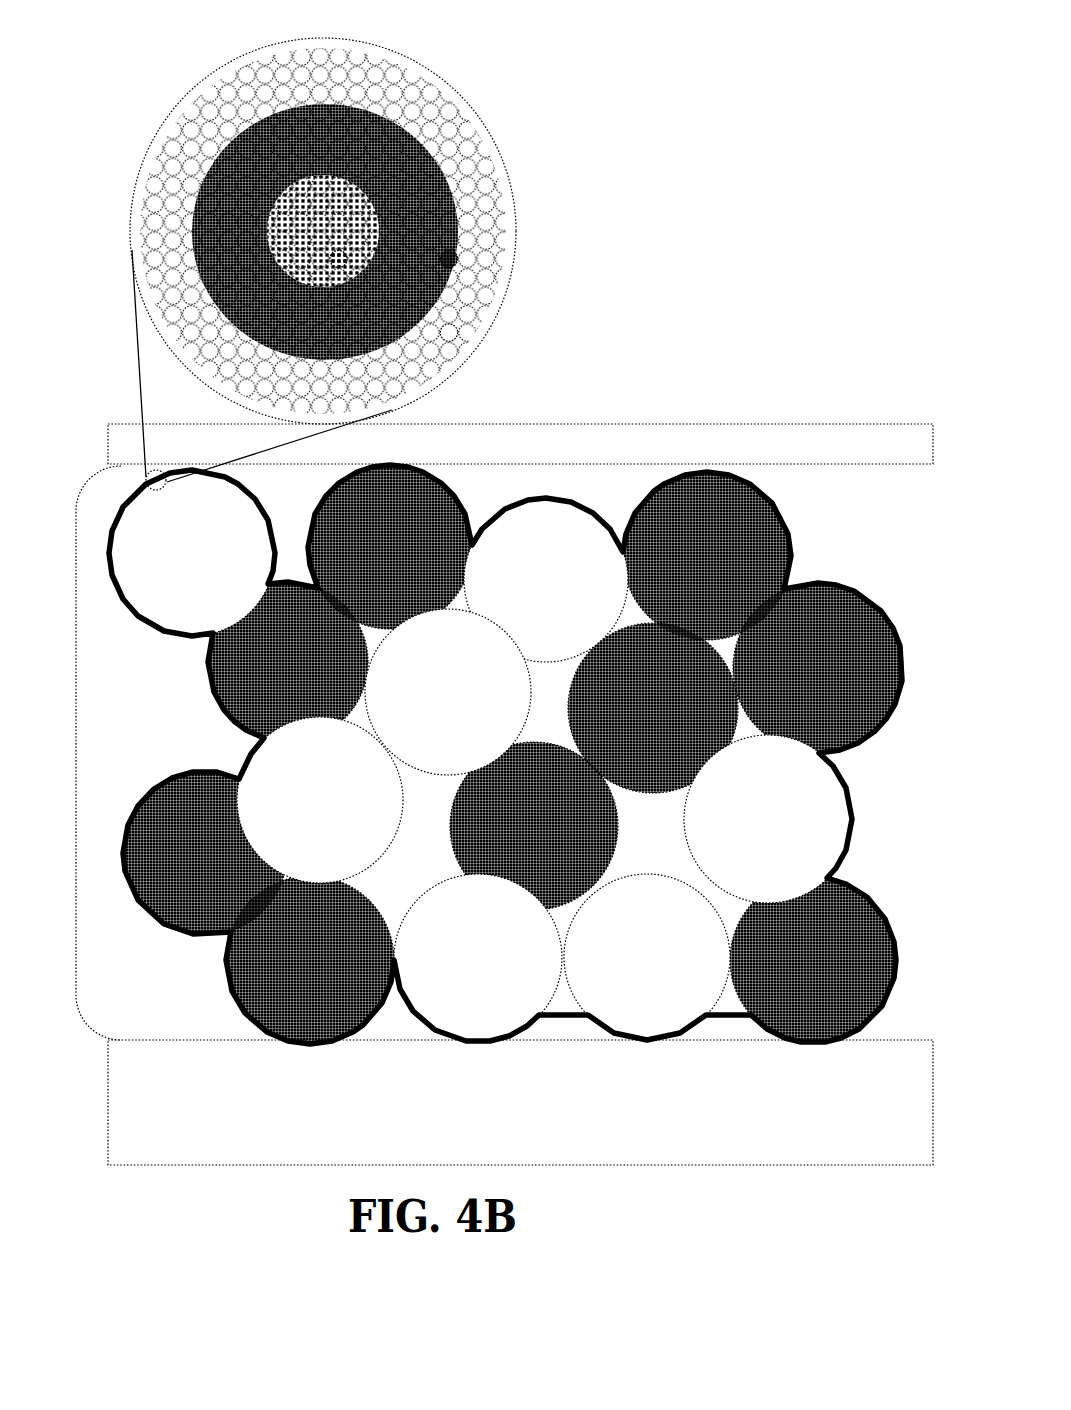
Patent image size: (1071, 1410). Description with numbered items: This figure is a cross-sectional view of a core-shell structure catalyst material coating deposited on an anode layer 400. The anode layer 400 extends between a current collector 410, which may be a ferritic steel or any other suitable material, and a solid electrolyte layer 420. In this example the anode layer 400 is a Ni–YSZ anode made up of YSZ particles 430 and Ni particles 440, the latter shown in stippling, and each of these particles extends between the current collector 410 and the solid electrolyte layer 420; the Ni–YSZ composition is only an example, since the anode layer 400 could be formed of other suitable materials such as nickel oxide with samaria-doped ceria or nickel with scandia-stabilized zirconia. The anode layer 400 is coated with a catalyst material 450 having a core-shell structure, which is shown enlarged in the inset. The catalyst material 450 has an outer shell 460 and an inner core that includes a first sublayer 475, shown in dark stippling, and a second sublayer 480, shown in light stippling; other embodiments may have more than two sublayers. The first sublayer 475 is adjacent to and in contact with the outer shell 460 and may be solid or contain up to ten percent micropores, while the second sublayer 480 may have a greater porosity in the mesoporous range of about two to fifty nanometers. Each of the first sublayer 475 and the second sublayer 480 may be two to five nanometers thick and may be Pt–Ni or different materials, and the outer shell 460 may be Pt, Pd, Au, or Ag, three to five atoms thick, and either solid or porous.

The anode layer 400 is at (76, 750).
The current collector 410 is at (588, 426).
The solid electrolyte layer 420 is at (685, 1166).
The YSZ particles 430 is at (823, 828).
The Ni particles 440 is at (768, 550).
The catalyst material 450 is at (457, 90).
The outer shell 460 is at (450, 334).
The first sublayer 475 is at (447, 262).
The second sublayer 480 is at (339, 262).